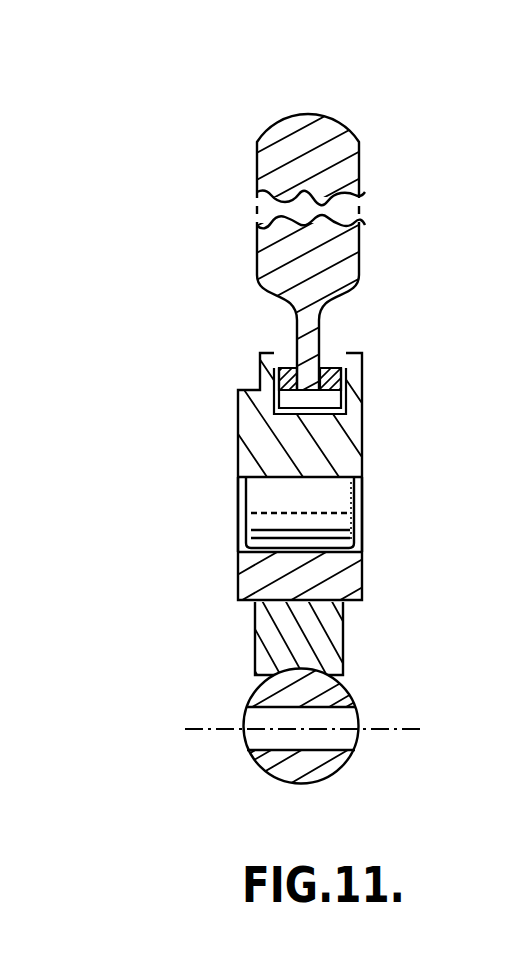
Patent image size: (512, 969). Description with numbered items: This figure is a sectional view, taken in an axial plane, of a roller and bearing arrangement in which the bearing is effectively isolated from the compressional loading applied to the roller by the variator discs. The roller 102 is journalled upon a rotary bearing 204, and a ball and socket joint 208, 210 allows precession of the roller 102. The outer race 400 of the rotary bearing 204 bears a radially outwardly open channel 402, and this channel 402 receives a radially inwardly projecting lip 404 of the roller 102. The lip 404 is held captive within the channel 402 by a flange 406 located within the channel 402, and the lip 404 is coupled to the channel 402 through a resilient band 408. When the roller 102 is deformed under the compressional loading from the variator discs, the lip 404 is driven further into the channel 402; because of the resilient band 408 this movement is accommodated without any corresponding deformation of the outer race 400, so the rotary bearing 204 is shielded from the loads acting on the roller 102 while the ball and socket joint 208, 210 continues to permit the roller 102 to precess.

The roller 102 is at (256, 177).
The rotary bearing 204 is at (227, 555).
The ball and socket joint 208 is at (318, 637).
The ball and socket joint 210 is at (327, 762).
The outer race 400 is at (285, 460).
The channel 402 is at (328, 418).
The lip 404 is at (322, 342).
The flange 406 is at (305, 395).
The resilient band 408 is at (272, 378).